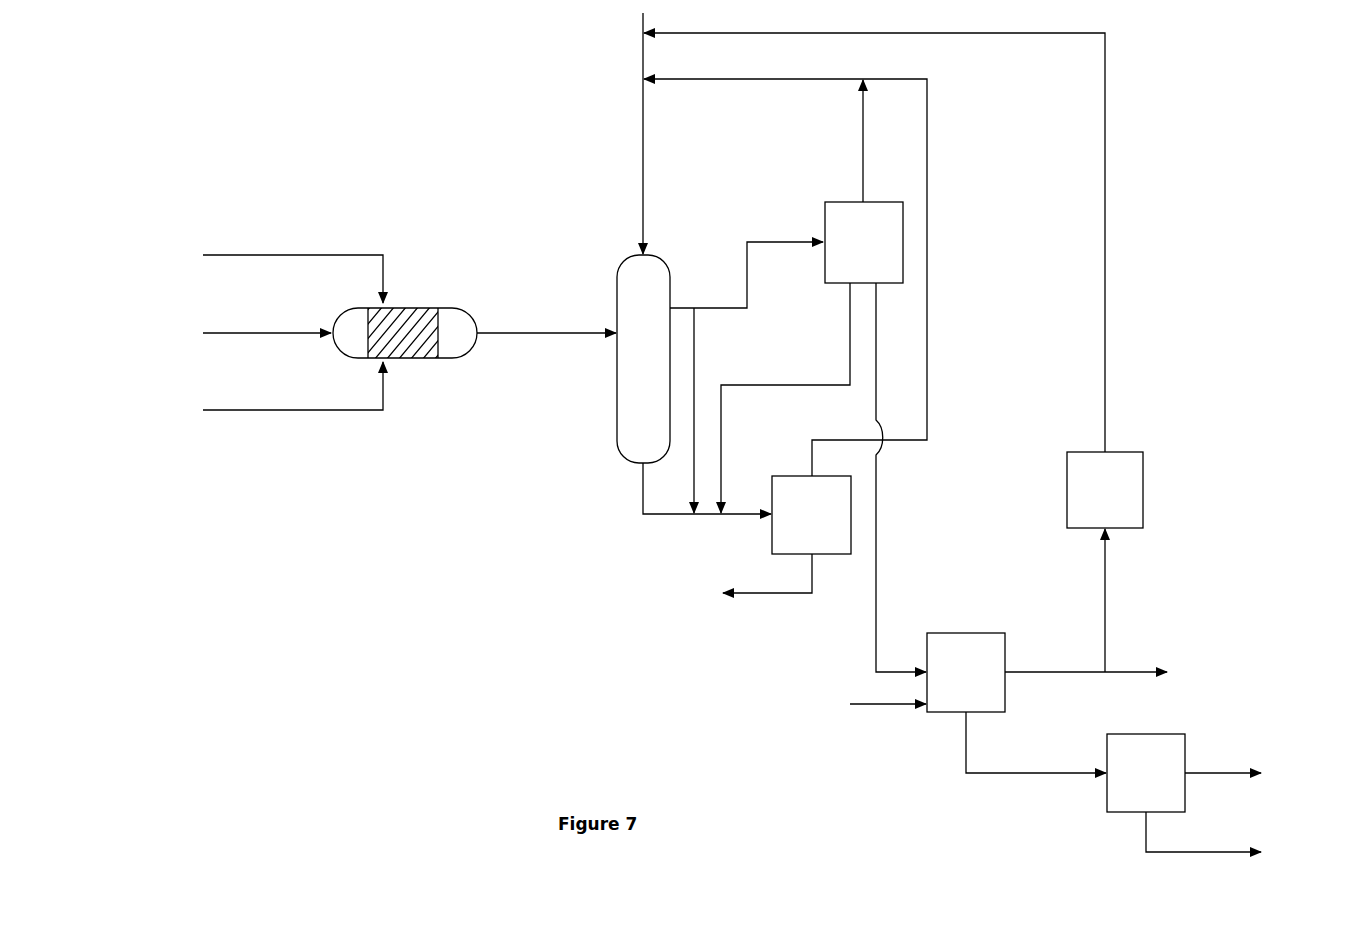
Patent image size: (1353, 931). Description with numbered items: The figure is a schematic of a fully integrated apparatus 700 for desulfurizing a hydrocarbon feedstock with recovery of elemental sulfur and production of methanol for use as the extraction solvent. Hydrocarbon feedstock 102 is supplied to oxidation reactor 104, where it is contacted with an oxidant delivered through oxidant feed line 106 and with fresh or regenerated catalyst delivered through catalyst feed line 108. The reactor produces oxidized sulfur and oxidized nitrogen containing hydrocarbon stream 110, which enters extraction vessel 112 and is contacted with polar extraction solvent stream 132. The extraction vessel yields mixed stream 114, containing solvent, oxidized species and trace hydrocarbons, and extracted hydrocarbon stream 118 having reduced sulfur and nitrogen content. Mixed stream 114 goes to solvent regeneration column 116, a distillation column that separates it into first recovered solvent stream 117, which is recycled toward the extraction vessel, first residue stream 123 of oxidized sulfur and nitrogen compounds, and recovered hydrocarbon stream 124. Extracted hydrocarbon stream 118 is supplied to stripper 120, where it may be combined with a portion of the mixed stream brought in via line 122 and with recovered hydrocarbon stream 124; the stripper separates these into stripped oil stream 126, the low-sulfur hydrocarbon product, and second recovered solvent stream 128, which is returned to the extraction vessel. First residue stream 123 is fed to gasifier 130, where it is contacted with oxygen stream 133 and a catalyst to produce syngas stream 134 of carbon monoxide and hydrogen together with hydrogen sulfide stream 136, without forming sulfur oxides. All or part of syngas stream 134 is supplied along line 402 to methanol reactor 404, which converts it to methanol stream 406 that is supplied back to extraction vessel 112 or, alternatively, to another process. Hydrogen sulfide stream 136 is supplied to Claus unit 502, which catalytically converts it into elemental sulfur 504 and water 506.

The apparatus 700 is at (236, 63).
The hydrocarbon feedstock 102 is at (229, 333).
The oxidation reactor 104 is at (423, 308).
The oxidant feed line 106 is at (229, 255).
The catalyst feed line 108 is at (229, 410).
The oxidized sulfur and oxidized nitrogen containing hydrocarbon stream 110 is at (500, 333).
The extraction vessel 112 is at (617, 282).
The mixed stream 114 is at (682, 308).
The solvent regeneration column 116 is at (825, 215).
The first recovered solvent stream 117 is at (863, 143).
The extracted hydrocarbon stream 118 is at (643, 497).
The stripper 120 is at (772, 530).
The line 122 is at (694, 372).
The first residue stream 123 is at (877, 508).
The recovered hydrocarbon stream 124 is at (765, 385).
The stripped oil stream 126 is at (752, 593).
The second recovered solvent stream 128 is at (927, 327).
The gasifier 130 is at (947, 633).
The extraction solvent stream 132 is at (643, 157).
The oxygen stream 133 is at (902, 706).
The syngas stream 134 is at (1030, 672).
The hydrogen sulfide stream 136 is at (1003, 773).
The stream 402 is at (1107, 595).
The methanol reactor 404 is at (1143, 490).
The methanol stream 406 is at (1106, 327).
The Claus unit 502 is at (1158, 734).
The elemental sulfur 504 is at (1222, 773).
The water 506 is at (1222, 852).